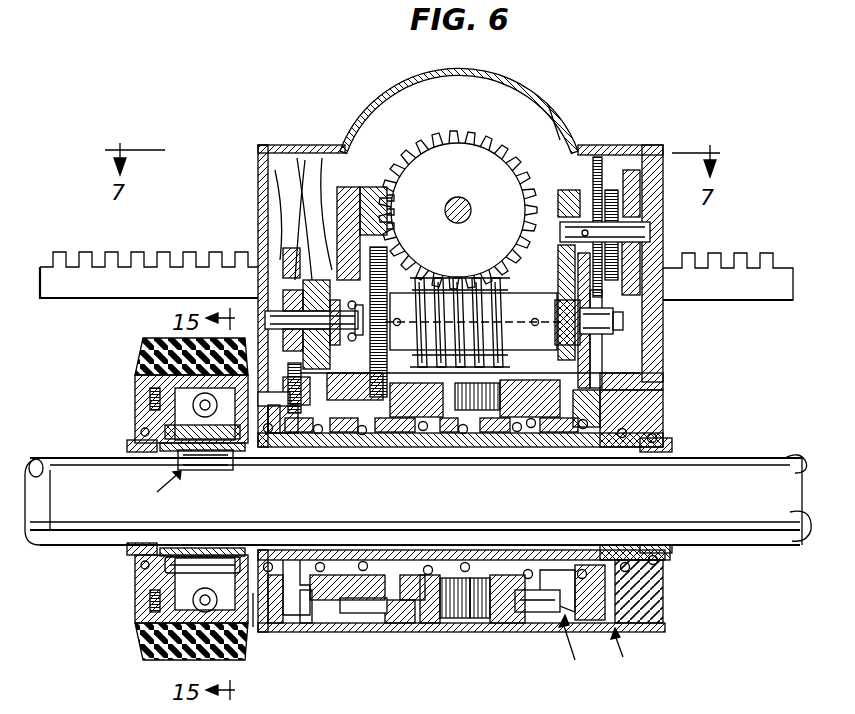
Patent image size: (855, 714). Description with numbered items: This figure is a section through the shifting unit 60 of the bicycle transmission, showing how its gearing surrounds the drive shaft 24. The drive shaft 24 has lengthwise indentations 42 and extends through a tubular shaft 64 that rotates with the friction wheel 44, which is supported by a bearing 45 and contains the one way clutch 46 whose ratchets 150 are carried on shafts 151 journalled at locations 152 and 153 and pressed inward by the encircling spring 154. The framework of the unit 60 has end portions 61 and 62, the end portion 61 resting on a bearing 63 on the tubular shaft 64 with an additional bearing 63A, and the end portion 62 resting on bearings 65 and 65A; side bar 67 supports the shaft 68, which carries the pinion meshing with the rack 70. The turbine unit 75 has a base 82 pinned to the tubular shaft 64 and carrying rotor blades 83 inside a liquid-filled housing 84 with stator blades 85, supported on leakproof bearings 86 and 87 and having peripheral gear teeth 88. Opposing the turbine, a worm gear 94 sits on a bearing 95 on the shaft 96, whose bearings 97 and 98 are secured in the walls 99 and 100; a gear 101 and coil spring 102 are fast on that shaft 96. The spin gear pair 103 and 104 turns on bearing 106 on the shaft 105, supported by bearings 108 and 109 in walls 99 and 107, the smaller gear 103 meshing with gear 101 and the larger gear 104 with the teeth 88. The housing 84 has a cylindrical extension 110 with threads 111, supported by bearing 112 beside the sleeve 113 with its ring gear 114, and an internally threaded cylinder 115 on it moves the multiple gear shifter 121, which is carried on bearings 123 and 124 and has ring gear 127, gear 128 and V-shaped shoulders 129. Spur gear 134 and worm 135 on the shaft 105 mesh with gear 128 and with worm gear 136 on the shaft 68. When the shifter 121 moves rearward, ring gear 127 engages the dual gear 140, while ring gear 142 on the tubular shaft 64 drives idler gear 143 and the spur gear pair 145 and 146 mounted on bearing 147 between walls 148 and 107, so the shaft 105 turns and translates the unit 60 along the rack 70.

The rack 70 is at (88, 246).
The bearing 98 is at (663, 250).
The worm gear 94 is at (627, 173).
The gear teeth 88 is at (645, 385).
The bearing 65 is at (665, 435).
The ring gear 142 is at (292, 445).
The idler gear 143 is at (316, 445).
The ring gear 127 is at (345, 445).
The ring gear 114 is at (393, 445).
The external threads 111 is at (480, 384).
The bearing 112 is at (470, 445).
The sleeve 113 is at (438, 445).
The rotor blades 83 is at (556, 445).
The turbine base 82 is at (604, 445).
The shaft 105 is at (262, 320).
The wall 148 is at (283, 255).
The bearing 147 is at (272, 222).
The larger spur gear 146 is at (305, 153).
The smaller spur gear 145 is at (266, 147).
The shaft support bearing 108 is at (345, 262).
The wall 107 is at (347, 187).
The side bar 67 is at (373, 187).
The spur gear 134 is at (457, 165).
The worm gear 136 is at (478, 140).
The shaft 68 is at (458, 196).
The shaft support bearing 109 is at (473, 309).
The worm 135 is at (505, 280).
The gear 101 is at (598, 157).
The coil spring 102 is at (611, 188).
The bearing 95 is at (637, 217).
The wall 99 is at (558, 192).
The bearing 97 is at (548, 104).
The shaft 96 is at (663, 228).
The larger gear 104 is at (595, 360).
The wall 100 is at (607, 296).
The smaller gear 103 is at (590, 310).
The bearing 106 is at (597, 322).
The lengthwise indentations 42 is at (732, 465).
The drive shaft 24 is at (63, 470).
The end portion 62 is at (665, 592).
The bearing 65A is at (625, 553).
The leakproof bearing 86 is at (588, 557).
The housing 84 is at (540, 612).
The stator blades 85 is at (533, 605).
The leakproof bearing 87 is at (527, 570).
The cylindrical extension 110 is at (497, 580).
The internally threaded cylinder 115 is at (463, 617).
The annular shoulders 129 is at (400, 617).
The bearing 123 is at (428, 570).
The multiple gear shifter 121 is at (378, 613).
The gear 128 is at (350, 613).
The bearing 124 is at (363, 557).
The dual gear 140 is at (302, 590).
The end portion 61 is at (270, 623).
The bearing 63 is at (268, 557).
The bearing 63A is at (253, 627).
The tubular shaft 64 is at (262, 447).
The turbine unit 75 is at (576, 647).
The shifting unit 60 is at (628, 653).
The journal location 152 is at (135, 418).
The shaft 151 is at (135, 412).
The bearing 45 is at (135, 428).
The ratchet 150 is at (202, 470).
The one way clutch 46 is at (158, 487).
The friction wheel 44 is at (137, 640).
The spring 154 is at (200, 605).
The journal location 153 is at (167, 567).